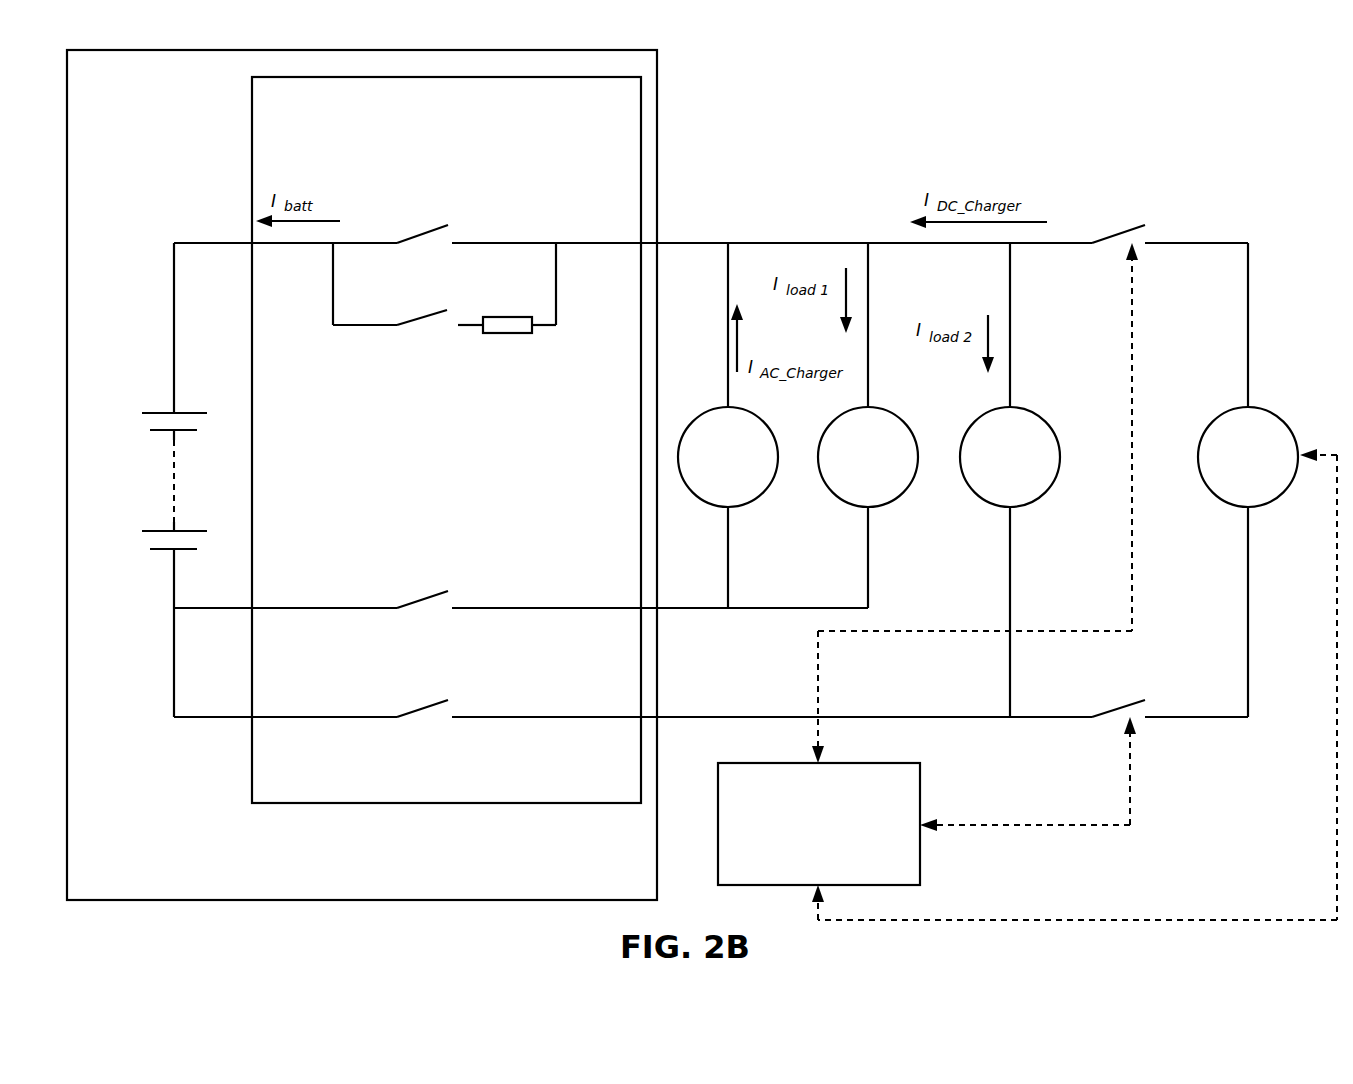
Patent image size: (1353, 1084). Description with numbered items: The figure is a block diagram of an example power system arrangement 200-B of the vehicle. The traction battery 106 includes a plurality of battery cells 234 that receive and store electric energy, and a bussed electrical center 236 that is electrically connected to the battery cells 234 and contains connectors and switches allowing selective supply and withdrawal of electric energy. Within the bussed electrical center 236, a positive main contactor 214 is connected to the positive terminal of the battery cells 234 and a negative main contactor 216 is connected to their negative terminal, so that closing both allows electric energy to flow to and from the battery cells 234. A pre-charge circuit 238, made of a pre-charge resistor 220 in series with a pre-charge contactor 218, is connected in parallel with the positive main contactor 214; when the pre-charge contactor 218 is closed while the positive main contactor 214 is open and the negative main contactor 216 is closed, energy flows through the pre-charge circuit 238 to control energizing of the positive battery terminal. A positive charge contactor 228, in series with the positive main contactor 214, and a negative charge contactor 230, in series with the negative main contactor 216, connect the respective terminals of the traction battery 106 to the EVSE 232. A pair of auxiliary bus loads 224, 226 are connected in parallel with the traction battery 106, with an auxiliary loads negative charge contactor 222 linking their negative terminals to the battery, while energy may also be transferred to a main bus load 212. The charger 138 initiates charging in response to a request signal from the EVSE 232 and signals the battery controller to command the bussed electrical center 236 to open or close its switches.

The power system arrangement 200-B is at (900, 74).
The traction battery 106 is at (346, 890).
The bussed electrical center 236 is at (463, 134).
The battery cells 234 is at (160, 412).
The positive main contactor 214 is at (422, 233).
The pre-charge contactor 218 is at (412, 322).
The pre-charge resistor 220 is at (521, 317).
The pre-charge circuit 238 is at (494, 404).
The auxiliary loads negative charge contactor 222 is at (420, 594).
The negative main contactor 216 is at (416, 710).
The auxiliary bus load 224 is at (683, 435).
The auxiliary bus load 226 is at (850, 507).
The main bus load 212 is at (990, 507).
The positive charge contactor 228 is at (1116, 242).
The negative charge contactor 230 is at (1109, 717).
The EVSE 232 is at (1230, 507).
The charger 138 is at (802, 846).